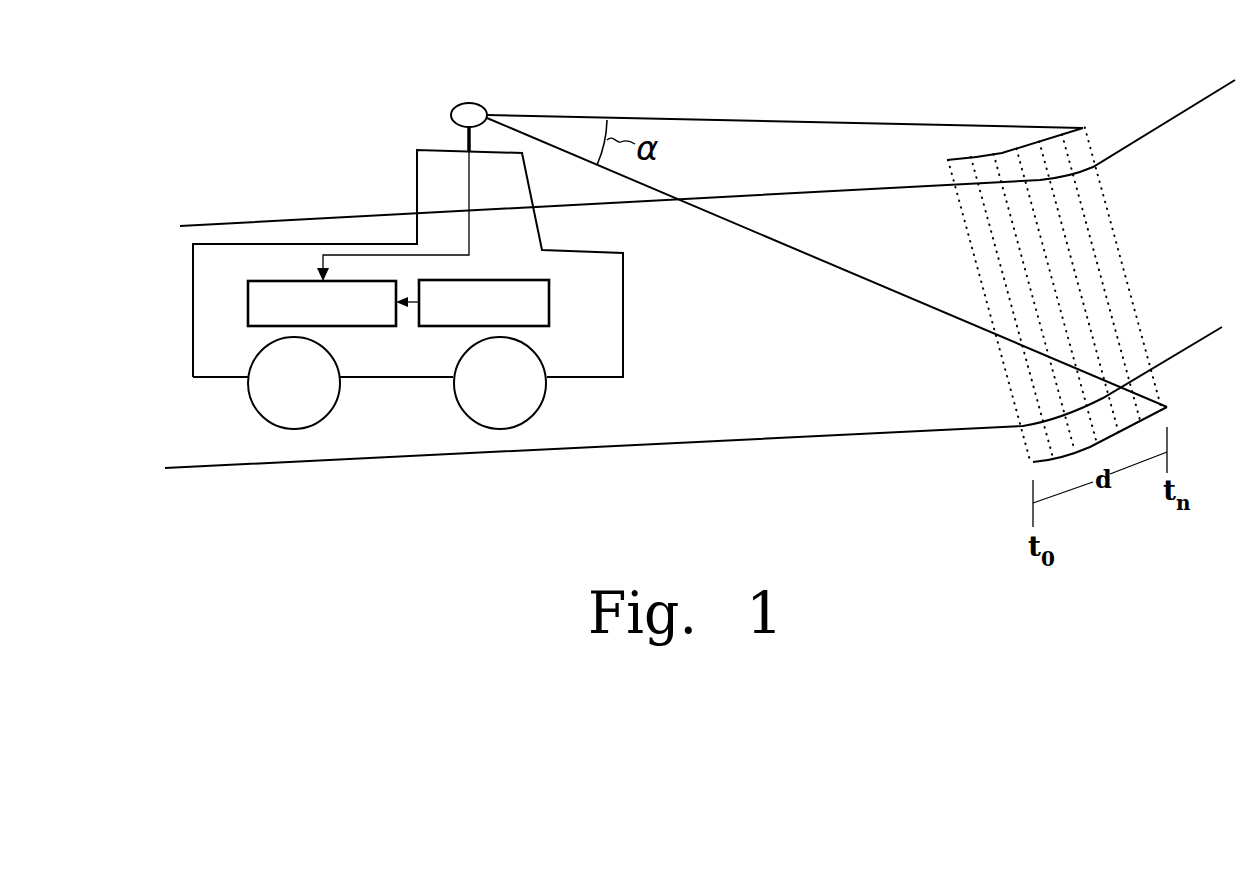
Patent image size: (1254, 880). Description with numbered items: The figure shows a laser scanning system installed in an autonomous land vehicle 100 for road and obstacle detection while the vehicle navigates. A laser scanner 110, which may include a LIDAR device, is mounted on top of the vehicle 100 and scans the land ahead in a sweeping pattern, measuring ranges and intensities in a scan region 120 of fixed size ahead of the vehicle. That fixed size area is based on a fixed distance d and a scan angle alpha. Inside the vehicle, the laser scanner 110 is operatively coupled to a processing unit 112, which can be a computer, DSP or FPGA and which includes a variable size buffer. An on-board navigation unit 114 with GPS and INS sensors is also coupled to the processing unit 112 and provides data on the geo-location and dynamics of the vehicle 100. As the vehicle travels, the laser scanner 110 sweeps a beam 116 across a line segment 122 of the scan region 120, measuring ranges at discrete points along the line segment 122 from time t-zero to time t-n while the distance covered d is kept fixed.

The autonomous land vehicle 100 is at (160, 282).
The laser scanner 110 is at (452, 113).
The processing unit 112 is at (248, 300).
The on-board navigation unit 114 is at (549, 301).
The beam 116 is at (783, 122).
The scan region 120 is at (984, 383).
The line segment 122 is at (1128, 288).